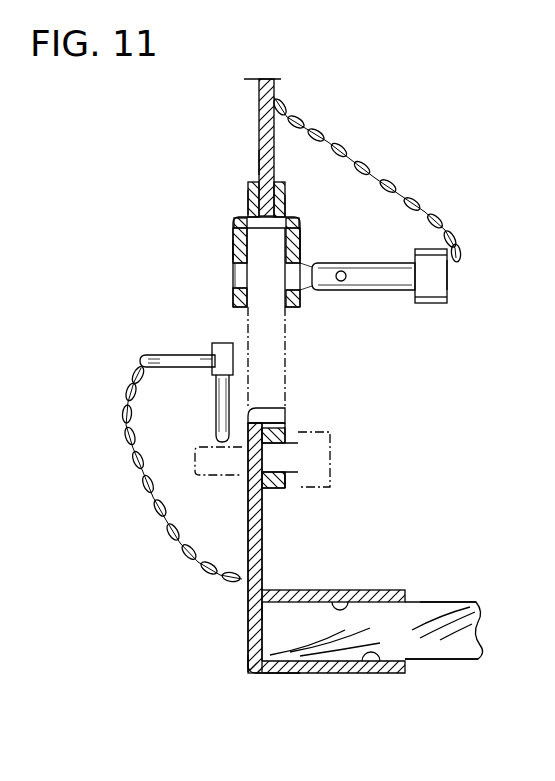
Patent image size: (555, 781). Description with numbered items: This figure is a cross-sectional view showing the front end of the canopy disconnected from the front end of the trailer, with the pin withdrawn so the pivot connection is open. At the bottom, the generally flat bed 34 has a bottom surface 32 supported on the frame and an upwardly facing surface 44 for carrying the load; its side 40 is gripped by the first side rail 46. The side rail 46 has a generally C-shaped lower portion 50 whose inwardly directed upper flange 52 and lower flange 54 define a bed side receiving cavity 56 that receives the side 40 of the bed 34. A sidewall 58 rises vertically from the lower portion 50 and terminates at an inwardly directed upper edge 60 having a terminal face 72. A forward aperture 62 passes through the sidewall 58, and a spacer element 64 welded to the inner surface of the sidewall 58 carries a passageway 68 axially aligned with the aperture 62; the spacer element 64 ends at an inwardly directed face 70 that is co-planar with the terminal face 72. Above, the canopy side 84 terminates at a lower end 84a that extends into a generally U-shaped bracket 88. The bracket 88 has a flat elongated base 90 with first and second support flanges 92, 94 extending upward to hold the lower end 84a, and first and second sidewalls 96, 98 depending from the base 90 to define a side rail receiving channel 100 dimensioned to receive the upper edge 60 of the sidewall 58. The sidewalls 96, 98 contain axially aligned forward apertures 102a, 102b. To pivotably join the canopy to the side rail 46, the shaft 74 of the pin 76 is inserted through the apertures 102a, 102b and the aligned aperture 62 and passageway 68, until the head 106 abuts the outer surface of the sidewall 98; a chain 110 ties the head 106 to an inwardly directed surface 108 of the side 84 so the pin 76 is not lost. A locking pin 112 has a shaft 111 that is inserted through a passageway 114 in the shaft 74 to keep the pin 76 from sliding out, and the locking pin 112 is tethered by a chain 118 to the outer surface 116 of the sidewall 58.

The bottom surface 32 is at (447, 660).
The bed 34 is at (492, 627).
The side 40 is at (246, 668).
The upwardly facing surface 44 is at (440, 600).
The first side rail 46 is at (282, 683).
The lower portion 50 is at (287, 646).
The upper flange 52 is at (396, 592).
The lower flange 54 is at (325, 670).
The bed side receiving cavity 56 is at (352, 594).
The sidewall 58 is at (255, 538).
The upper edge 60 is at (270, 410).
The forward aperture 62 is at (250, 463).
The spacer element 64 is at (290, 430).
The passageway 68 is at (272, 452).
The inwardly directed face 70 is at (302, 486).
The terminal face 72 is at (287, 418).
The shaft 74 is at (380, 292).
The pin 76 is at (449, 303).
The side 84 is at (258, 96).
The lower end 84a is at (255, 168).
The U-shaped bracket 88 is at (229, 216).
The base 90 is at (286, 213).
The first support flange 92 is at (246, 197).
The second support flange 94 is at (280, 184).
The first sidewall 96 is at (232, 245).
The second sidewall 98 is at (298, 241).
The side rail receiving channel 100 is at (270, 312).
The forward aperture 102a is at (235, 287).
The forward aperture 102b is at (333, 263).
The head 106 is at (440, 273).
The inwardly directed surface 108 is at (276, 97).
The chain 110 is at (370, 163).
The shaft 111 is at (222, 405).
The locking pin 112 is at (140, 360).
The passageway 114 is at (346, 278).
The outer surface 116 is at (248, 606).
The chain 118 is at (158, 512).